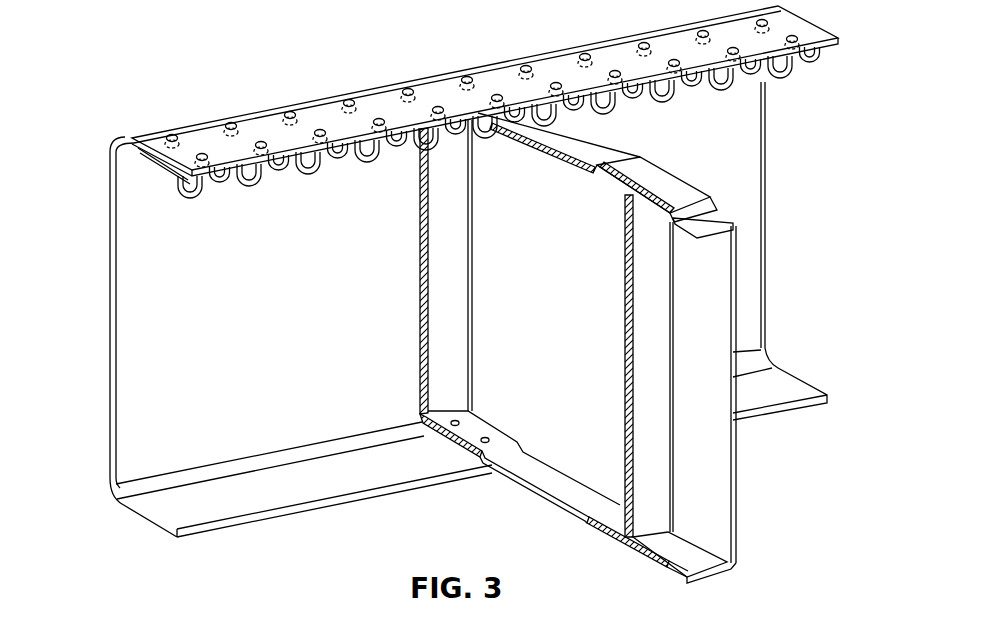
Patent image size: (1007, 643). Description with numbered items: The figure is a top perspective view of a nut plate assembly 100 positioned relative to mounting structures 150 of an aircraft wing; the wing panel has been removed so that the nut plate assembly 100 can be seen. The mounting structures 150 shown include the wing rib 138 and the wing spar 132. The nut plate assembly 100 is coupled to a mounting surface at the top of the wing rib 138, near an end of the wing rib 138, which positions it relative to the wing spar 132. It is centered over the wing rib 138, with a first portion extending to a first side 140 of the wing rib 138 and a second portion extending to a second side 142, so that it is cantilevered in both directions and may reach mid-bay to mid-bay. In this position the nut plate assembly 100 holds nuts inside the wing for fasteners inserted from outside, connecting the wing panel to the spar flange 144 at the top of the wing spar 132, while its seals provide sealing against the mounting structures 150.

The nut plate assembly 100 is at (846, 76).
The wing spar 132 is at (750, 175).
The wing rib 138 is at (577, 435).
The first side 140 is at (640, 553).
The second side 142 is at (732, 535).
The spar flange 144 is at (135, 157).
The mounting structures 150 is at (134, 393).